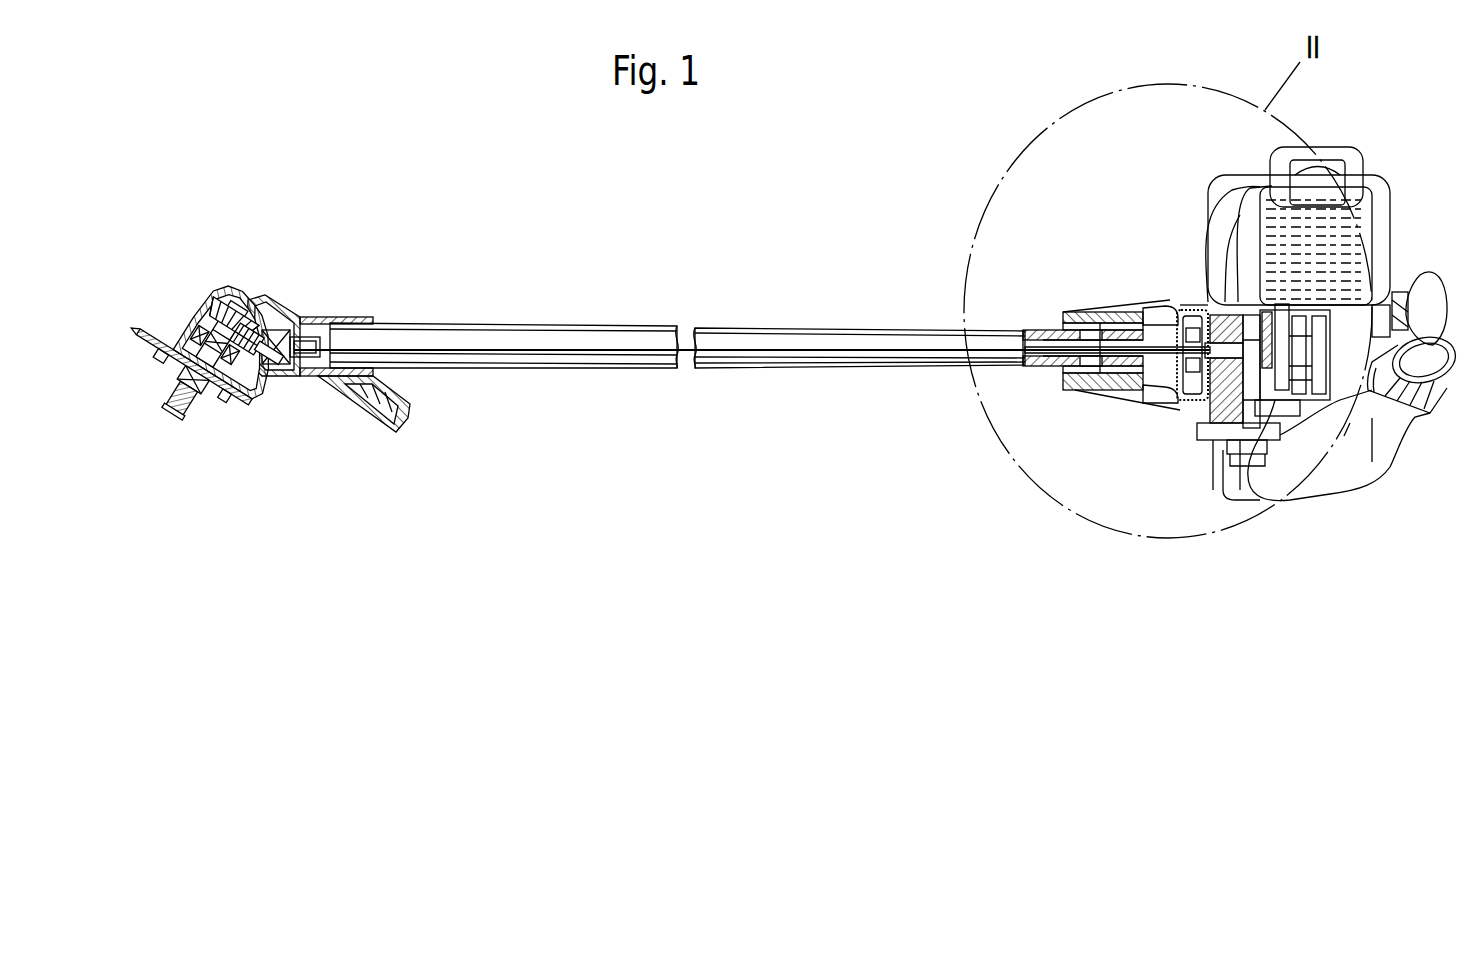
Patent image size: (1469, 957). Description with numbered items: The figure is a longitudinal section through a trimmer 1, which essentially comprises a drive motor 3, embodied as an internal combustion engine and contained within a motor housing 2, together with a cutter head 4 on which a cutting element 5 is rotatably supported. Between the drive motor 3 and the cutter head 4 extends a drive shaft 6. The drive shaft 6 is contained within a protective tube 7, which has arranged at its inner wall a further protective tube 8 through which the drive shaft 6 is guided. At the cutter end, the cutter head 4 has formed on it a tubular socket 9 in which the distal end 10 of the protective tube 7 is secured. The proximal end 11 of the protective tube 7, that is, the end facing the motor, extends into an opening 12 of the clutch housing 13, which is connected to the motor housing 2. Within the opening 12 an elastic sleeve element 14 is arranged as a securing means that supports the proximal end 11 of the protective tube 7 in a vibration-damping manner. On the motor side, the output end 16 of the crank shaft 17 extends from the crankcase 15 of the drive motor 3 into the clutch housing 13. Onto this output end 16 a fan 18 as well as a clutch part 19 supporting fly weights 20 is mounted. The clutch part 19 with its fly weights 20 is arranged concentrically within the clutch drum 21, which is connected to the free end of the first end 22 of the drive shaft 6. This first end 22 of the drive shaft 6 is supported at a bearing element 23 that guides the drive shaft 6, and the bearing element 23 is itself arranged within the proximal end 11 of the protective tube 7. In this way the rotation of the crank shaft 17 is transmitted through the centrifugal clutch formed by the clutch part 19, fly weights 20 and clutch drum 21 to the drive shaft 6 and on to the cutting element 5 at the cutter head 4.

The trimmer 1 is at (685, 456).
The motor housing 2 is at (1385, 207).
The drive motor 3 is at (1350, 235).
The cutter head 4 is at (230, 288).
The cutting element 5 is at (215, 396).
The drive shaft 6 is at (320, 342).
The protective tube 7 is at (812, 370).
The protective tube 8 is at (1053, 372).
The tubular socket 9 is at (355, 318).
The distal end 10 is at (335, 362).
The proximal end 11 is at (1090, 385).
The opening 12 is at (1052, 323).
The clutch housing 13 is at (1195, 420).
The elastic sleeve element 14 is at (1063, 330).
The crankcase 15 is at (1278, 437).
The output end 16 is at (1232, 272).
The crank shaft 17 is at (1219, 290).
The fan 18 is at (1378, 392).
The clutch part 19 is at (1188, 400).
The fly weights 20 is at (1160, 340).
The clutch drum 21 is at (1110, 335).
The first end 22 is at (1135, 388).
The bearing element 23 is at (1085, 335).